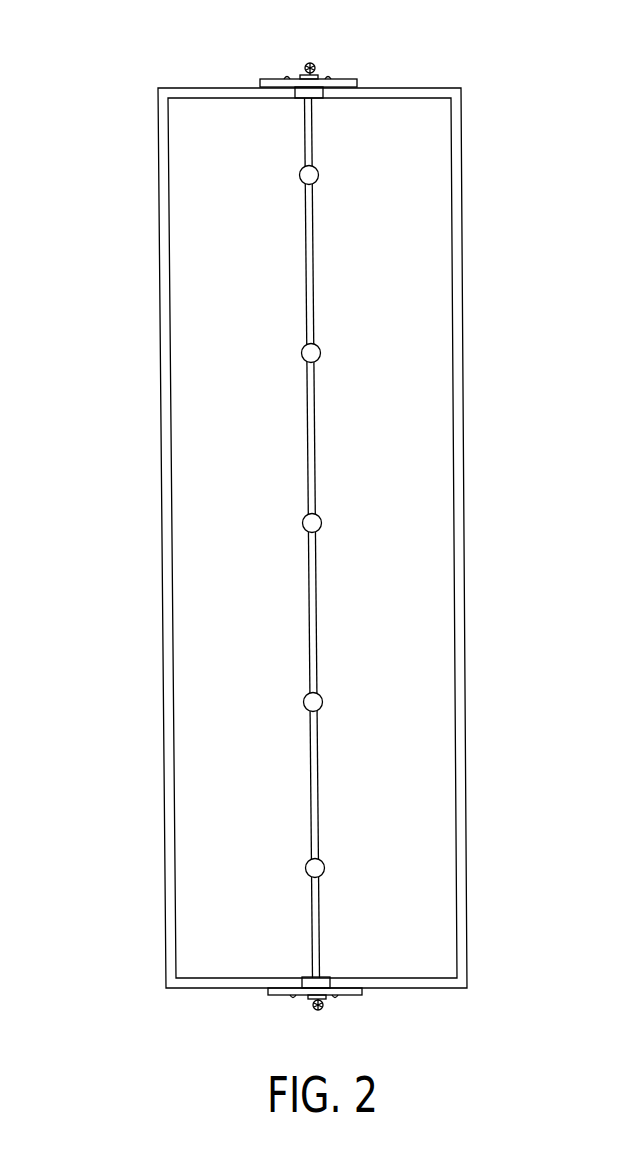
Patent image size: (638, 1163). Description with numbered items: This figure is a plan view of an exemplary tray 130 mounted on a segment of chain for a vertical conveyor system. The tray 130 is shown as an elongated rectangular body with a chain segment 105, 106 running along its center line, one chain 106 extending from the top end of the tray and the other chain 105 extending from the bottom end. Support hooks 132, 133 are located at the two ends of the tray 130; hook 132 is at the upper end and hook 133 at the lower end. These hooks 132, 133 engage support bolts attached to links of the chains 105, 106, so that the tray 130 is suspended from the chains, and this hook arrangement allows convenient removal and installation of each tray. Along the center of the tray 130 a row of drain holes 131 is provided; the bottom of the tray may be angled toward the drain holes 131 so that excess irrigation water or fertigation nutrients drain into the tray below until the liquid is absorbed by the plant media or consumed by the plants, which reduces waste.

The chain 105 is at (318, 1010).
The chain 106 is at (307, 62).
The tray 130 is at (172, 532).
The drain hole 131 is at (320, 520).
The support hook 132 is at (350, 80).
The support hook 133 is at (358, 996).